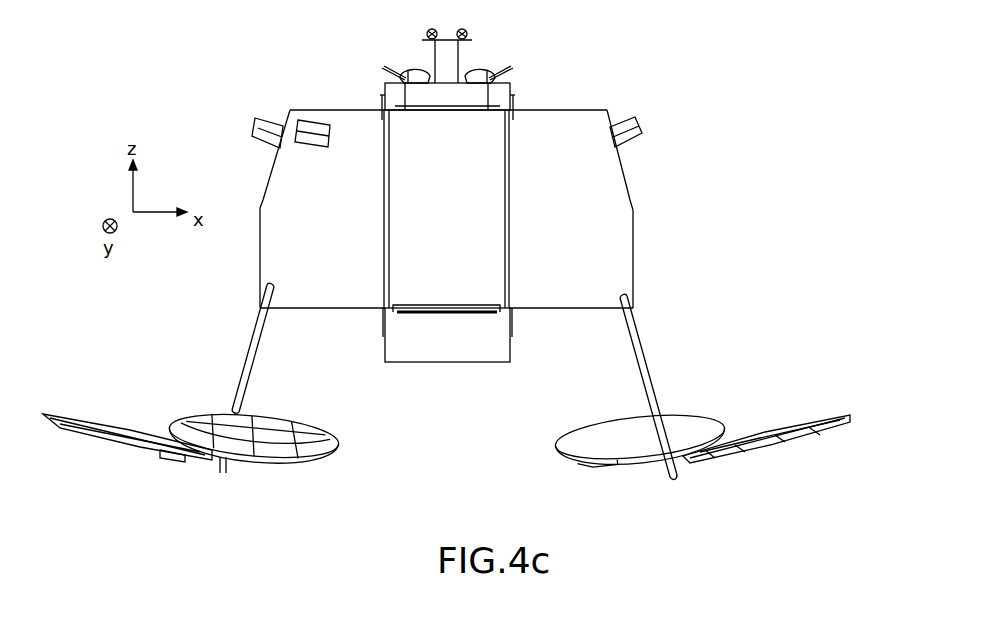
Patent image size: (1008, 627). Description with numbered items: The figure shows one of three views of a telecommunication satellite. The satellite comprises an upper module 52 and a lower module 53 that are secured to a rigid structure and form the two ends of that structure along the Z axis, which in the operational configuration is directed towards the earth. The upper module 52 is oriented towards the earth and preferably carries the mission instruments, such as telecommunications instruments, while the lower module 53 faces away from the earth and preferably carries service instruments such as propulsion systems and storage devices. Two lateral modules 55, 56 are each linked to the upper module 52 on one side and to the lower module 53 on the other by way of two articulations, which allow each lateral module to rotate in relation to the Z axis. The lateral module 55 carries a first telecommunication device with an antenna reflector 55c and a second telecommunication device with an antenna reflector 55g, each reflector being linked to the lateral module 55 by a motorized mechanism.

The upper module 52 is at (463, 95).
The lower module 53 is at (462, 338).
The lateral module 55 is at (353, 128).
The antenna reflector 55c is at (295, 465).
The antenna reflector 55g is at (138, 452).
The lateral module 56 is at (572, 127).